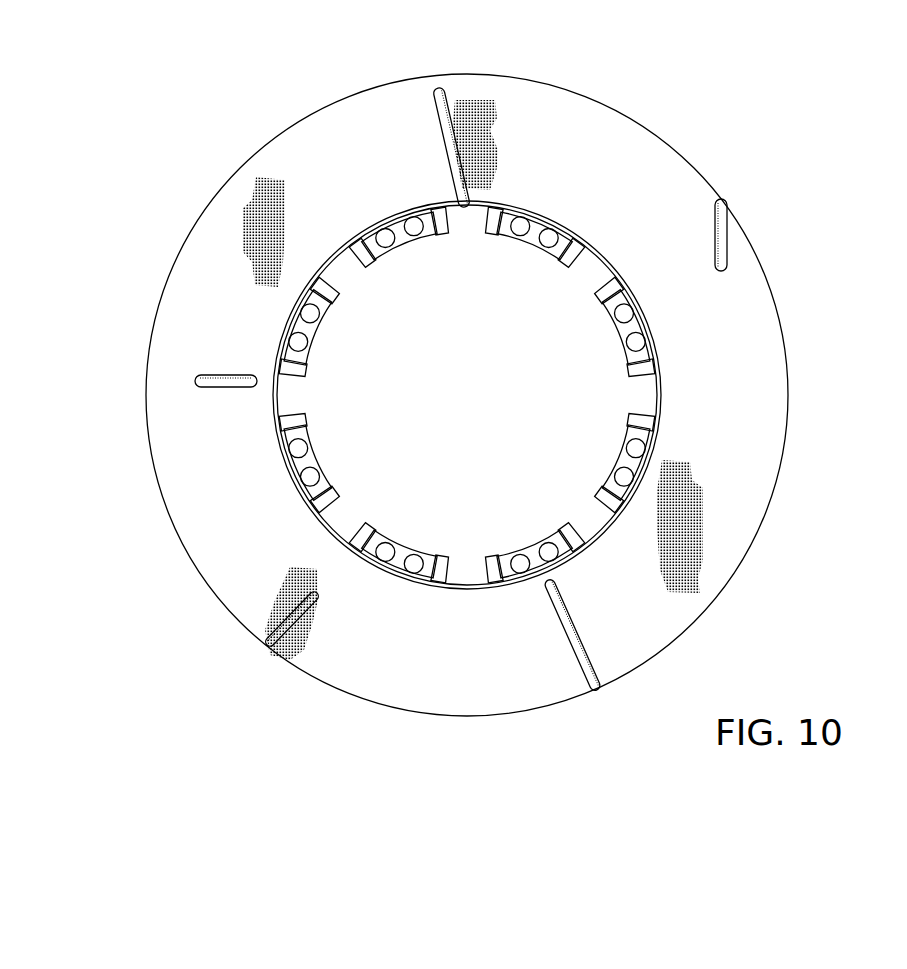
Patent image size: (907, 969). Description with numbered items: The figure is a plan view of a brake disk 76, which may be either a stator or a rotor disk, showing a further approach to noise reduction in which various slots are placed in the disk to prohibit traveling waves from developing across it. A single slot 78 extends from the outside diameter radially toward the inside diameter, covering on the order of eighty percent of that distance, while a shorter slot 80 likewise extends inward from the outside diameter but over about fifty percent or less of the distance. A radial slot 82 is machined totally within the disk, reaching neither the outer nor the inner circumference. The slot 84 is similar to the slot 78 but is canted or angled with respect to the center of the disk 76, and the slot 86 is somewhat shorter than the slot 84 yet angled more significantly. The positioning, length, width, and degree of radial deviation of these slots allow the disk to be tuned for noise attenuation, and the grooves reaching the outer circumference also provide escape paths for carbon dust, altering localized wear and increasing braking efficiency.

The disk 76 is at (230, 147).
The single slot 78 is at (597, 675).
The shorter slot 80 is at (268, 644).
The radial slot 82 is at (197, 383).
The slot 84 is at (438, 88).
The slot 86 is at (721, 238).